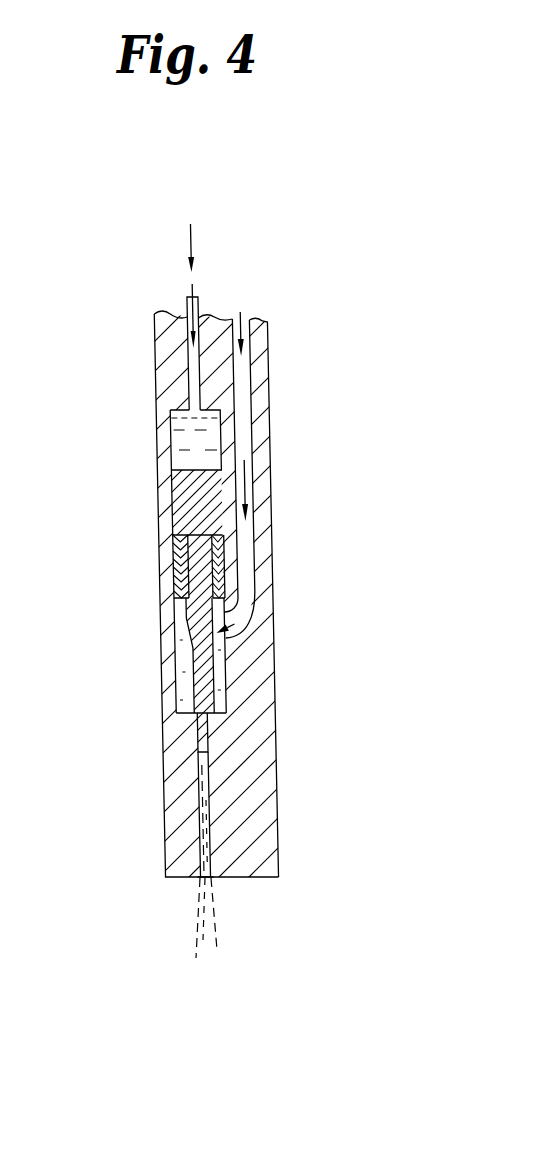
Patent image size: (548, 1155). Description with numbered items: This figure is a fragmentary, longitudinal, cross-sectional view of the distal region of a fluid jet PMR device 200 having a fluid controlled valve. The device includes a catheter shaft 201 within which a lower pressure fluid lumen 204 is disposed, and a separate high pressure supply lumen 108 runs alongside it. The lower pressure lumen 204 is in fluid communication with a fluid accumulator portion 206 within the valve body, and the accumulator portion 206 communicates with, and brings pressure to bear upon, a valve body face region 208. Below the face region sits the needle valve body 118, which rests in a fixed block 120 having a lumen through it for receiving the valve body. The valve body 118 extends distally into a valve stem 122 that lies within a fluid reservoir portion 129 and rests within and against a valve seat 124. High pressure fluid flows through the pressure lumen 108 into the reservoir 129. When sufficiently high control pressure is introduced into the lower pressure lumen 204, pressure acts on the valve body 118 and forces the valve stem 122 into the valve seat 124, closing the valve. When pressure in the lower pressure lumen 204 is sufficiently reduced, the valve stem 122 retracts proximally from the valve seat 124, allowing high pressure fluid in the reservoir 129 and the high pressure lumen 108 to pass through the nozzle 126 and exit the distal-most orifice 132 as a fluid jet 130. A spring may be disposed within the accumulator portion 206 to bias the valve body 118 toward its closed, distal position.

The fluid jet PMR device 200 is at (141, 229).
The catheter shaft 201 is at (267, 350).
The lower pressure fluid lumen 204 is at (190, 363).
The fluid accumulator portion 206 is at (171, 421).
The valve body face region 208 is at (185, 455).
The needle valve body 118 is at (178, 492).
The fixed block 120 is at (172, 556).
The valve stem 122 is at (177, 650).
The valve seat 124 is at (193, 742).
The pressure supply lumen 108 is at (246, 408).
The fluid reservoir portion 129 is at (226, 681).
The nozzle portion 126 is at (208, 803).
The distal-most orifice 132 is at (197, 878).
The fluid jet 130 is at (218, 940).